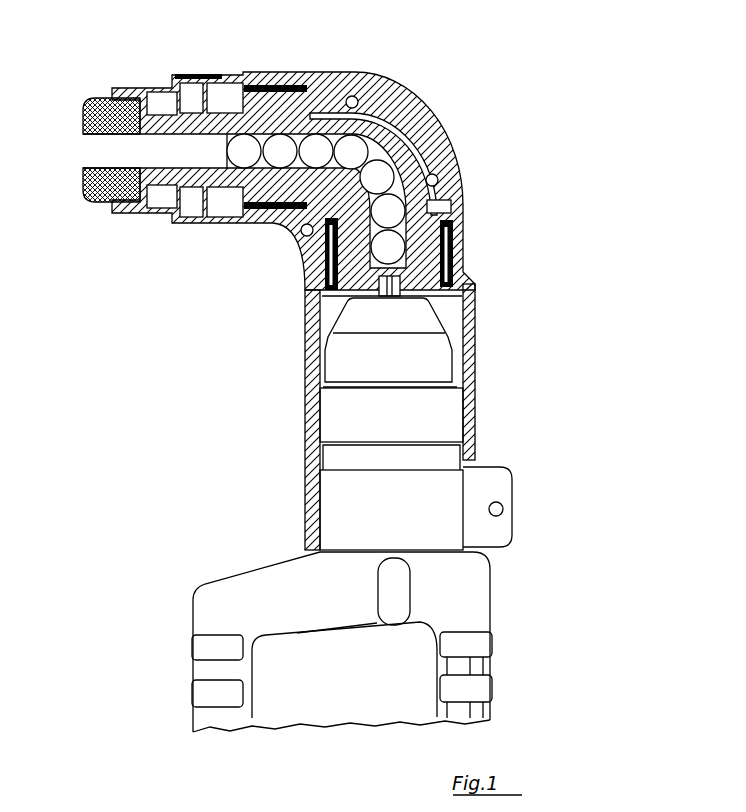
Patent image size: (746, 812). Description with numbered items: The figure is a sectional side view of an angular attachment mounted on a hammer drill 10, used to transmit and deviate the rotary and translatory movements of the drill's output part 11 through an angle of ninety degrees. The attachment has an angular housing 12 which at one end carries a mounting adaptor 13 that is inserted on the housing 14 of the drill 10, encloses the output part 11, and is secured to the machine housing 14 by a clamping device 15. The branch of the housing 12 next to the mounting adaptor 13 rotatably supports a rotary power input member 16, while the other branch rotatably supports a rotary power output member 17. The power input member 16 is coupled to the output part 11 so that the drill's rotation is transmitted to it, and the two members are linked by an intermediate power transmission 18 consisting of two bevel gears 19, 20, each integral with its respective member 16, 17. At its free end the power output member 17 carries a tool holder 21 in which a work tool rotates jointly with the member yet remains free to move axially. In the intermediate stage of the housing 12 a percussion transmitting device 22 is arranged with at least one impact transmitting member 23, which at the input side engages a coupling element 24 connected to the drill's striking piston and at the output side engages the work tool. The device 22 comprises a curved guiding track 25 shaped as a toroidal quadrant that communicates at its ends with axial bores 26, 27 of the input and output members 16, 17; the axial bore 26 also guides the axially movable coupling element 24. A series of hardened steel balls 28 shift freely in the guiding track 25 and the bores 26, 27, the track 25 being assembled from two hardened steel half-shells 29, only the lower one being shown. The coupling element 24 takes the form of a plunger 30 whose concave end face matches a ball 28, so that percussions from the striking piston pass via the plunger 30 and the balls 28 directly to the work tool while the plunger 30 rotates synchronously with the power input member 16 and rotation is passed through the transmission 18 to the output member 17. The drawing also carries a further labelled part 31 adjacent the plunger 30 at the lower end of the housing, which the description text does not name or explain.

The hammer drill 10 is at (497, 592).
The output part 11 is at (433, 358).
The angular housing 12 is at (423, 132).
The mounting adaptor 13 is at (306, 418).
The housing 14 is at (212, 598).
The clamping device 15 is at (497, 493).
The rotary power input member 16 is at (420, 256).
The rotary power output member 17 is at (257, 115).
The intermediate power transmission 18 is at (300, 235).
The bevel gear 19 is at (455, 195).
The bevel gear 20 is at (320, 88).
The tool holder 21 is at (103, 157).
The percussion transmitting device 22 is at (380, 120).
The impact transmitting member 23 is at (370, 142).
The coupling element 24 is at (350, 277).
The curved guiding track 25 is at (400, 158).
The axial bore 26 is at (442, 222).
The axial bore 27 is at (213, 138).
The steel balls 28 is at (196, 223).
The half-shells 29 is at (268, 222).
The plunger 30 is at (450, 305).
The coupling 31 is at (396, 298).